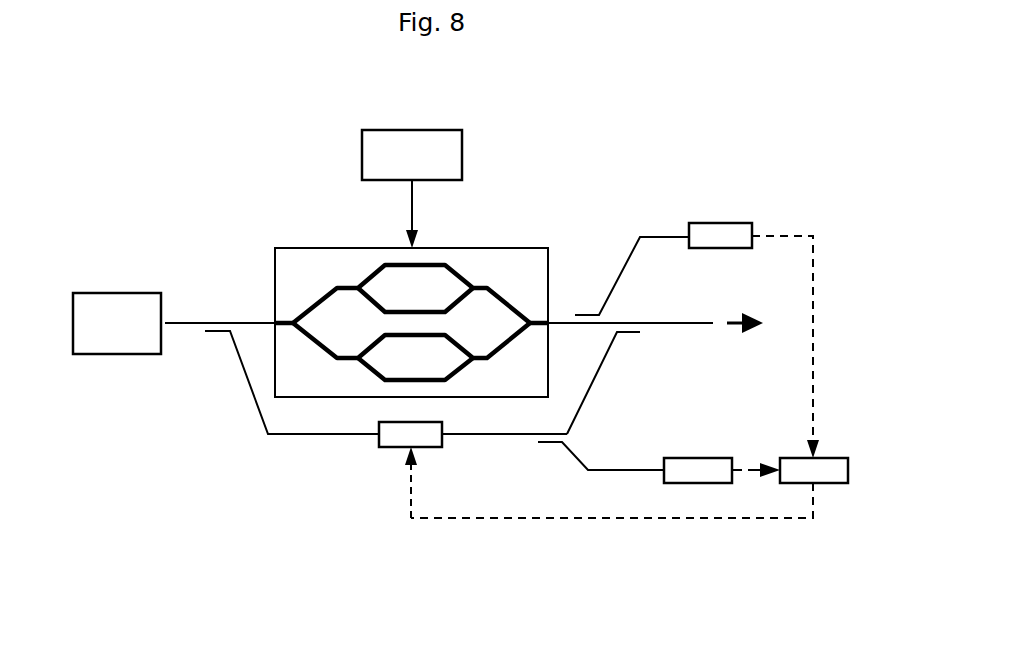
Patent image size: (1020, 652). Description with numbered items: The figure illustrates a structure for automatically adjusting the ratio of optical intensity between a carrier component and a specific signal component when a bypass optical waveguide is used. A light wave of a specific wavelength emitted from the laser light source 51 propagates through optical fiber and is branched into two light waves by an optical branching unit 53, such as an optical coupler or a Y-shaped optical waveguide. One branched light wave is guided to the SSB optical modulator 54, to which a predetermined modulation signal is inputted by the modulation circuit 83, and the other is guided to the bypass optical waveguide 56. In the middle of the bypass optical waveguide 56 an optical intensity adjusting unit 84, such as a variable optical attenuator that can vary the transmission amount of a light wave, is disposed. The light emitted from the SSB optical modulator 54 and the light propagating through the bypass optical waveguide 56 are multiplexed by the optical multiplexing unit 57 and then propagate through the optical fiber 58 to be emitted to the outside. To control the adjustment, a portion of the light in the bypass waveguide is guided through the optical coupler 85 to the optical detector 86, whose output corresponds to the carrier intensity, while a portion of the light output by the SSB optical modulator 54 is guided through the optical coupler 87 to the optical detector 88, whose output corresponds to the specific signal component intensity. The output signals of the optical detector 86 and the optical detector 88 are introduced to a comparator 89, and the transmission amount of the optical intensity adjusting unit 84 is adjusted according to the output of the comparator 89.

The laser light source 51 is at (108, 347).
The optical branching unit 53 is at (212, 322).
The SSB optical modulator 54 is at (480, 247).
The bypass optical waveguide 56 is at (313, 435).
The optical multiplexing unit 57 is at (628, 333).
The optical fiber 58 is at (672, 322).
The modulation circuit 83 is at (443, 152).
The optical intensity adjusting unit 84 is at (397, 435).
The optical coupler 85 is at (538, 440).
The optical detector 86 is at (693, 470).
The optical coupler 87 is at (587, 313).
The optical detector 88 is at (720, 237).
The comparator 89 is at (817, 470).